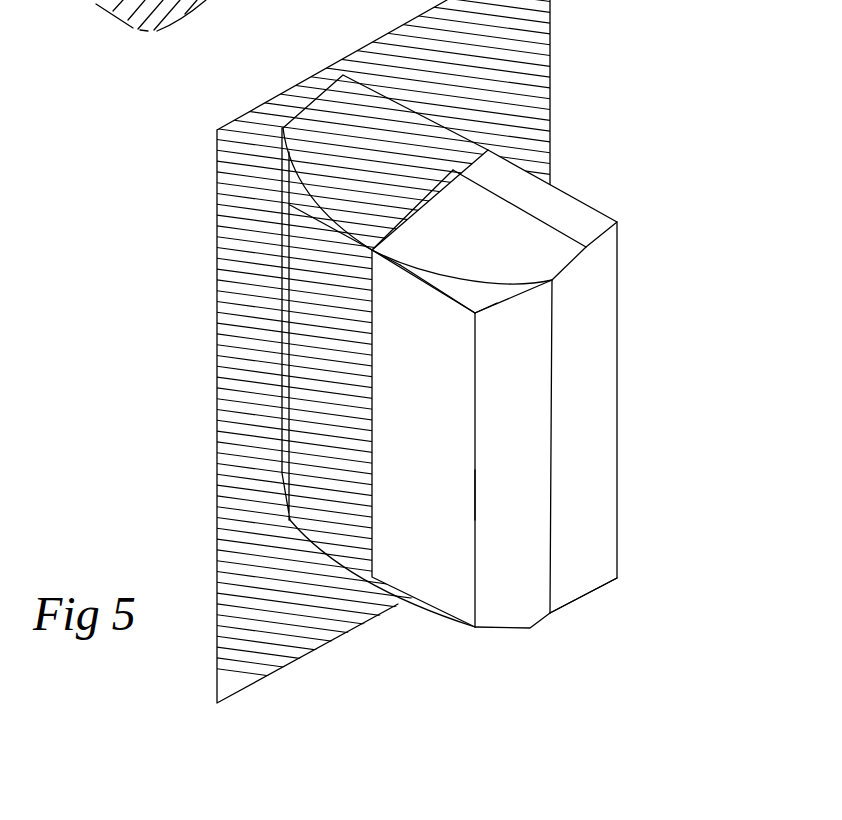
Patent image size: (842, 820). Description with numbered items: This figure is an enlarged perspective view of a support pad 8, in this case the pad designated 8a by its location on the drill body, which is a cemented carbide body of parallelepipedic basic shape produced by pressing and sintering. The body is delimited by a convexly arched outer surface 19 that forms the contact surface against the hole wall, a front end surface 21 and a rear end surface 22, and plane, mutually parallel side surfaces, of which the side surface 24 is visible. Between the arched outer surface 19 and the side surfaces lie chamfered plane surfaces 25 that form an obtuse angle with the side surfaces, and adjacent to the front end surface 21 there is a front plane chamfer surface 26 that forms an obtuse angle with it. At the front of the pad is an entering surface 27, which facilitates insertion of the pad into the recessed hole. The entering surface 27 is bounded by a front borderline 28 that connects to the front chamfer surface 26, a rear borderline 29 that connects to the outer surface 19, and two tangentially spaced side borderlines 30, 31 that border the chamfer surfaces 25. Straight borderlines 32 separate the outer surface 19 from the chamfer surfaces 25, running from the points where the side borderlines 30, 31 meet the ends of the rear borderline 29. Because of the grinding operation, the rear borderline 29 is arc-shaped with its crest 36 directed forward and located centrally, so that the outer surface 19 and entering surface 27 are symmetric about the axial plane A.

The support pad 8 is at (603, 172).
The support pad 8a is at (262, 0).
The axial plane A is at (493, 81).
The outer surface 19 is at (436, 468).
The front end surface 21 is at (541, 215).
The rear end surface 22 is at (568, 608).
The side surface 24 is at (602, 423).
The chamfer surface 25 is at (502, 448).
The front chamfer surface 26 is at (488, 246).
The entering surface 27 is at (480, 296).
The front borderline 28 is at (402, 262).
The rear borderline 29 is at (441, 297).
The side borderline 30 is at (286, 182).
The side borderline 31 is at (497, 298).
The straight borderline 32 is at (475, 493).
The crest 36 is at (365, 253).